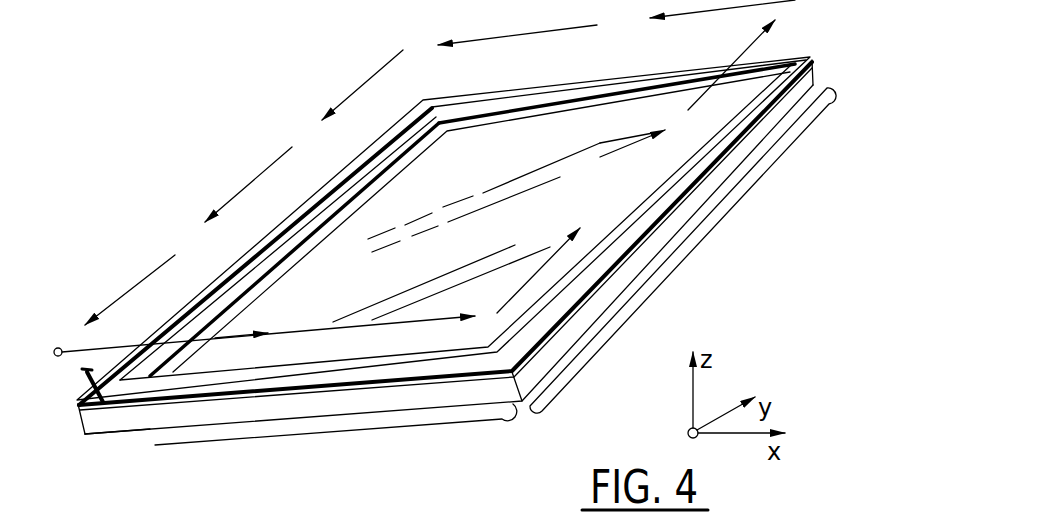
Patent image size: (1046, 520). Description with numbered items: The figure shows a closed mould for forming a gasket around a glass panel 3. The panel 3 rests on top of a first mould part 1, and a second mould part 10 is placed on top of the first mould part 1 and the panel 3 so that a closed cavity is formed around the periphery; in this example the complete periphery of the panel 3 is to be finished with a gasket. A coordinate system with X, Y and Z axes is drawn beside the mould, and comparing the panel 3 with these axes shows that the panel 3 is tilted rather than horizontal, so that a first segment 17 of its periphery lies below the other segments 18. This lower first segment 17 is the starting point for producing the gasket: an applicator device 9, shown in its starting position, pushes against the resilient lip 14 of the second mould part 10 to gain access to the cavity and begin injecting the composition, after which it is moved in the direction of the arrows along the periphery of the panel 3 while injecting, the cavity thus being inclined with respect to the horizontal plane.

The first mould part 1 is at (258, 414).
The glass panel 3 is at (467, 176).
The applicator device 9 is at (85, 383).
The second mould part 10 is at (473, 107).
The resilient lip 14 is at (108, 404).
The first segment 17 is at (148, 445).
The other segments 18 is at (348, 433).